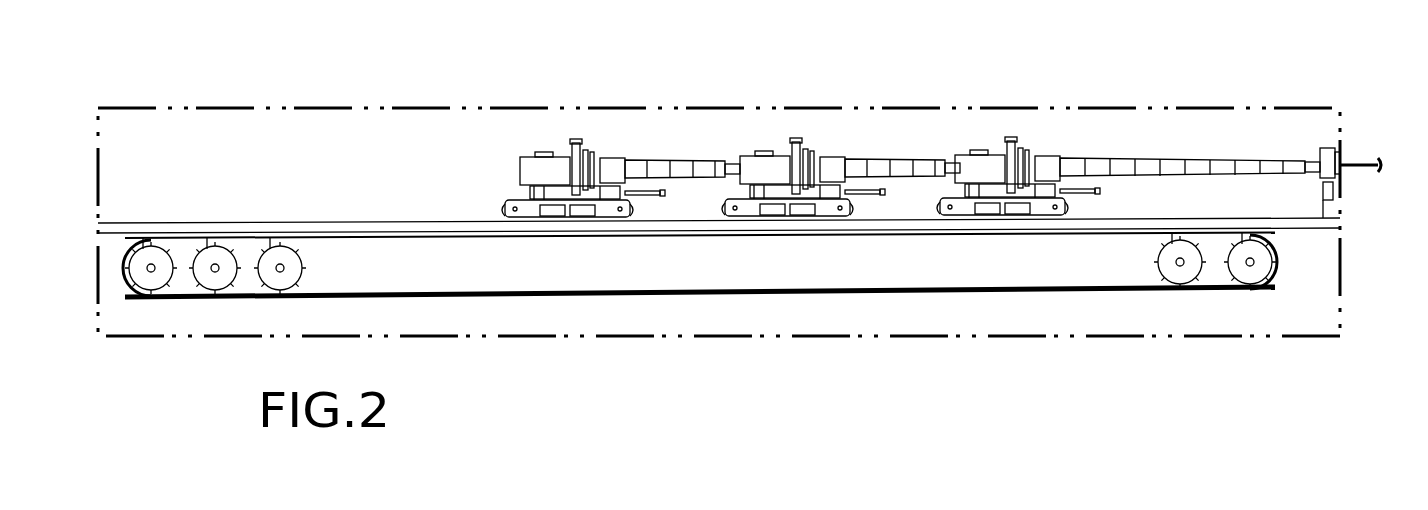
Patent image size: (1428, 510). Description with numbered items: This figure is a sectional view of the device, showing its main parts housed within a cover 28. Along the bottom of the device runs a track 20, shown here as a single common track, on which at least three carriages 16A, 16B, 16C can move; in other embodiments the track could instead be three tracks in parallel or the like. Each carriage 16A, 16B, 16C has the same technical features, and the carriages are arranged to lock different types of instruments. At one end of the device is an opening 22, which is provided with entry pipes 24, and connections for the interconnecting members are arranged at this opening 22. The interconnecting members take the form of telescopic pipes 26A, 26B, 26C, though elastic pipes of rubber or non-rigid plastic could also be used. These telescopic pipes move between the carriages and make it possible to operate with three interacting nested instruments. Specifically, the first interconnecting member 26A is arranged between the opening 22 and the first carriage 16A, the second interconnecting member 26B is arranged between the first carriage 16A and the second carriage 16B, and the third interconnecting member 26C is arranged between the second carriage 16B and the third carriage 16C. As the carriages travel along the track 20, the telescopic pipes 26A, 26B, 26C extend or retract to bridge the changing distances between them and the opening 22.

The cover 28 is at (233, 108).
The track 20 is at (1308, 220).
The first carriage 16A is at (994, 120).
The second carriage 16B is at (767, 124).
The third carriage 16C is at (535, 127).
The first interconnecting member 26A is at (1182, 130).
The second interconnecting member 26B is at (888, 129).
The third interconnecting member 26C is at (658, 131).
The entry pipes 24 is at (1320, 176).
The opening 22 is at (1348, 149).